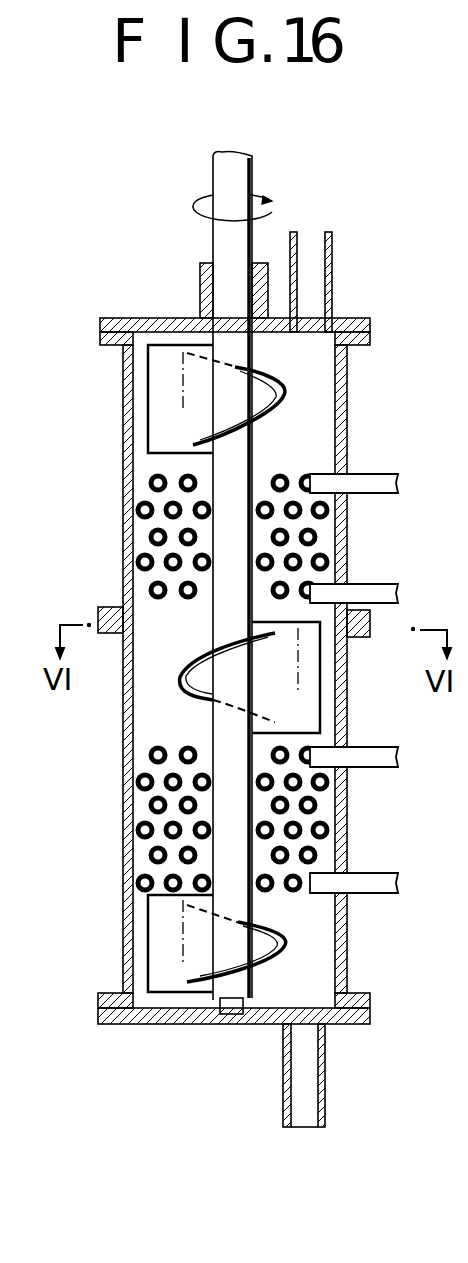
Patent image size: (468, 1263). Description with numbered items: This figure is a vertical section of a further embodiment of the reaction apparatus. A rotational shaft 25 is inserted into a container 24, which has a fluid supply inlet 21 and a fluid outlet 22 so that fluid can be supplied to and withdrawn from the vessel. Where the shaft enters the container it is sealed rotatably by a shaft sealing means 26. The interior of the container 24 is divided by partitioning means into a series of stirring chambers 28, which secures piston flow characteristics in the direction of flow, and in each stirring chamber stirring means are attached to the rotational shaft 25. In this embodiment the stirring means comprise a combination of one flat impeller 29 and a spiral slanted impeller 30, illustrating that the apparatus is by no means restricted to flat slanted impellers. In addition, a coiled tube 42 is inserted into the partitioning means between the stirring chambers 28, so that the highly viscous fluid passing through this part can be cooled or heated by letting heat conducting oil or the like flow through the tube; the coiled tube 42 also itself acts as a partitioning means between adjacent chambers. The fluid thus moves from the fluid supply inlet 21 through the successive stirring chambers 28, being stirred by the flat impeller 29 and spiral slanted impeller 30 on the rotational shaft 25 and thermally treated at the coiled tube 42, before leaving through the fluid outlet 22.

The fluid supply inlet 21 is at (283, 1107).
The fluid outlet 22 is at (317, 232).
The container 24 is at (345, 418).
The rotational shaft 25 is at (253, 163).
The shaft sealing means 26 is at (200, 290).
The stirring chambers 28 is at (142, 387).
The flat impeller 29 is at (157, 433).
The spiral slanted impeller 30 is at (285, 393).
The coiled tube 42 is at (320, 553).